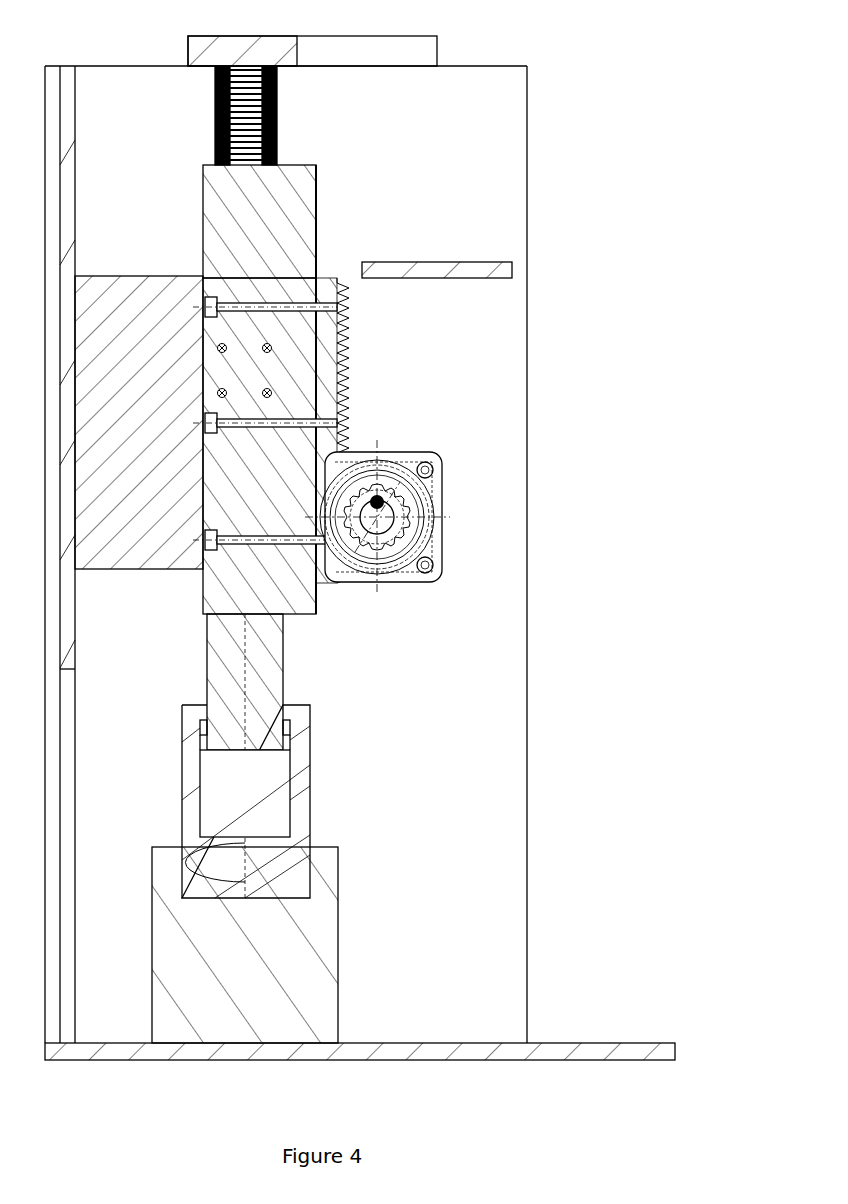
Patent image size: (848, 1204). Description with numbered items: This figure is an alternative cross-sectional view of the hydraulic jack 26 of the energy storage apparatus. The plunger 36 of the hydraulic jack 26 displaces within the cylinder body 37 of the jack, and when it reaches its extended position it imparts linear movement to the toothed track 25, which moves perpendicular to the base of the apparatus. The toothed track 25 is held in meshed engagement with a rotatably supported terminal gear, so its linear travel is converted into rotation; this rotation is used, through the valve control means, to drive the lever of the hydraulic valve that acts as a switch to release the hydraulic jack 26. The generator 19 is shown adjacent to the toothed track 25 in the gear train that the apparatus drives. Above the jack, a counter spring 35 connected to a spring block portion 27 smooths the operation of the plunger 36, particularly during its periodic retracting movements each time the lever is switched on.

The generator 19 is at (415, 502).
The toothed track 25 is at (323, 355).
The hydraulic jack 26 is at (610, 270).
The spring block portion 27 is at (255, 182).
The counter spring 35 is at (275, 125).
The plunger 36 is at (250, 685).
The cylinder body 37 is at (250, 766).